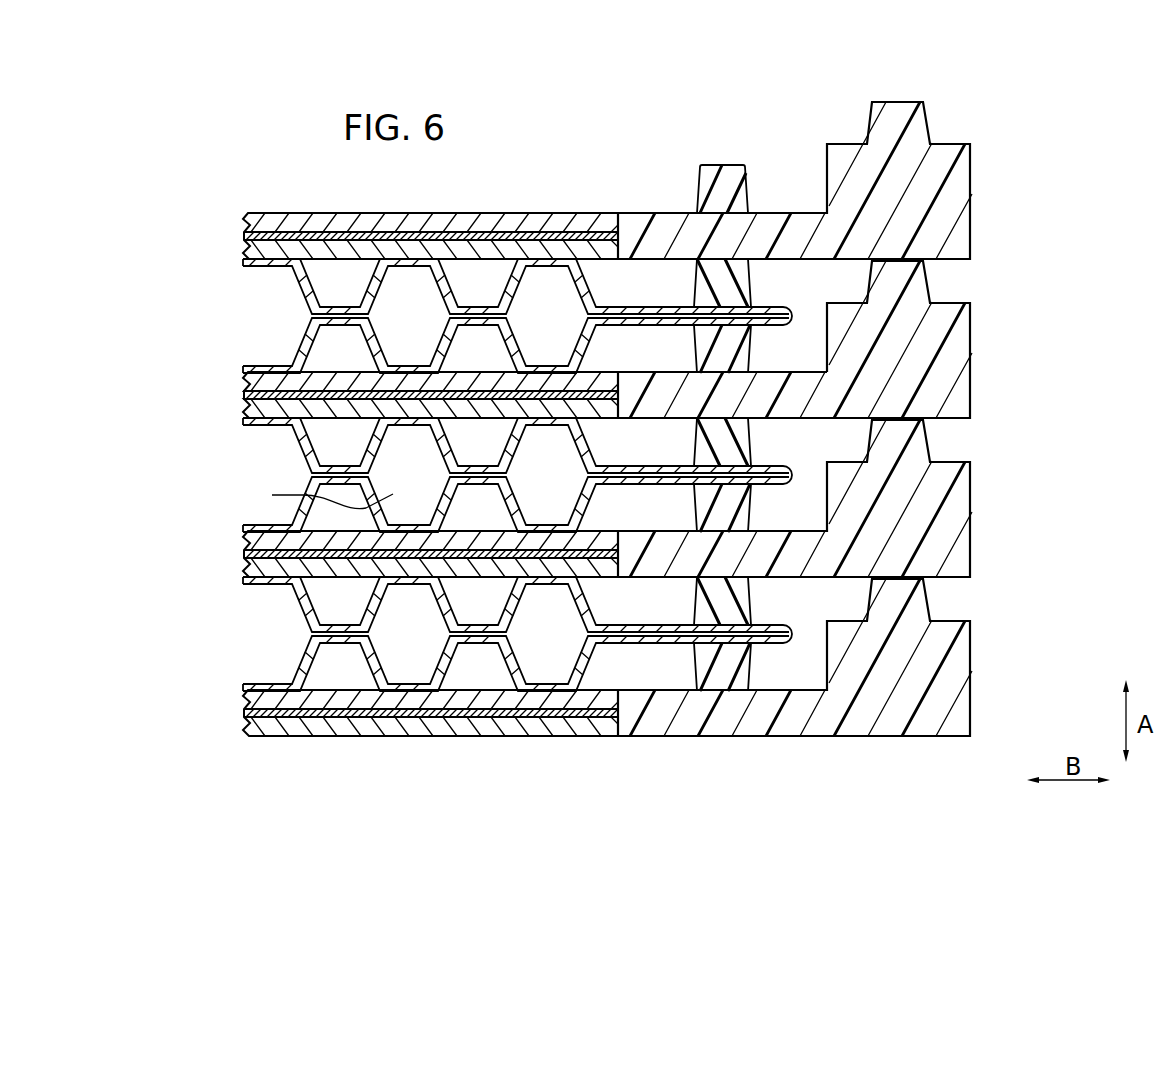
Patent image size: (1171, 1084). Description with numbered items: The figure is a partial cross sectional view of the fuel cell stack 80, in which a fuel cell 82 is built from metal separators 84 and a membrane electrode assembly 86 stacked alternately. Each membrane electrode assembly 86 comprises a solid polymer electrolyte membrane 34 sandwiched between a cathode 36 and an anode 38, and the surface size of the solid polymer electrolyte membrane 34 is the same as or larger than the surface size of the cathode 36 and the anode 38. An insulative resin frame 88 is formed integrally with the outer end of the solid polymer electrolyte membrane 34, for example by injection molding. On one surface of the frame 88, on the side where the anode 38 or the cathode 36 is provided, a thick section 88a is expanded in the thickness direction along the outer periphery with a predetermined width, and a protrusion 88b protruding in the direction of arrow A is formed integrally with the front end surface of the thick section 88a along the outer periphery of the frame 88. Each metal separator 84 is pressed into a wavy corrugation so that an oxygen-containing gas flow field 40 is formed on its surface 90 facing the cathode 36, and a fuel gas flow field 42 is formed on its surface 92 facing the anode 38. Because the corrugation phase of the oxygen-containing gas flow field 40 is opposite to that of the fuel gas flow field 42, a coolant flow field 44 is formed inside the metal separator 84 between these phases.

The fuel cell stack 80 is at (582, 169).
The fuel cell 82 is at (1023, 315).
The metal separator 84 is at (329, 283).
The membrane electrode assembly 86 is at (190, 343).
The frame 88 is at (980, 390).
The thick section 88a is at (962, 351).
The protrusion 88b is at (923, 283).
The surface facing the cathode 90 is at (586, 277).
The surface facing the anode 92 is at (580, 350).
The solid polymer electrolyte membrane 34 is at (405, 393).
The cathode 36 is at (405, 421).
The anode 38 is at (405, 369).
The oxygen-containing gas flow field 40 is at (335, 439).
The fuel gas flow field 42 is at (332, 353).
The coolant flow field 44 is at (549, 476).